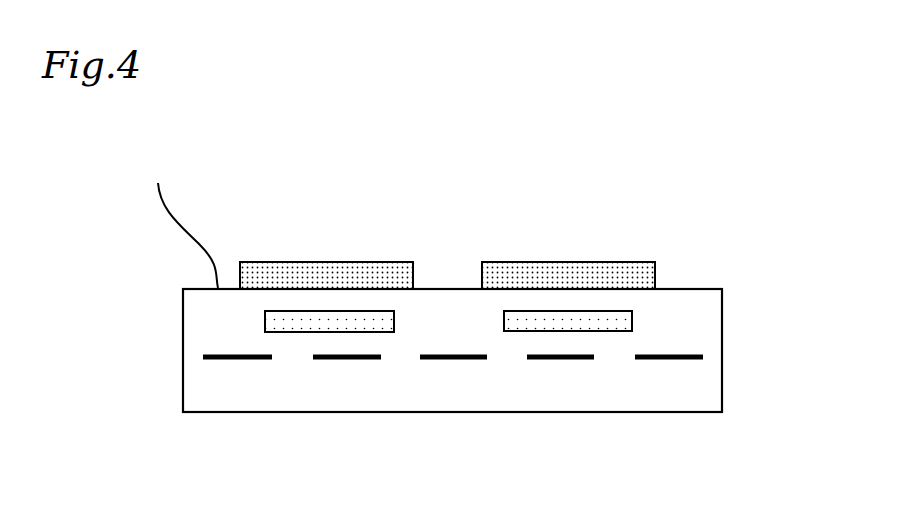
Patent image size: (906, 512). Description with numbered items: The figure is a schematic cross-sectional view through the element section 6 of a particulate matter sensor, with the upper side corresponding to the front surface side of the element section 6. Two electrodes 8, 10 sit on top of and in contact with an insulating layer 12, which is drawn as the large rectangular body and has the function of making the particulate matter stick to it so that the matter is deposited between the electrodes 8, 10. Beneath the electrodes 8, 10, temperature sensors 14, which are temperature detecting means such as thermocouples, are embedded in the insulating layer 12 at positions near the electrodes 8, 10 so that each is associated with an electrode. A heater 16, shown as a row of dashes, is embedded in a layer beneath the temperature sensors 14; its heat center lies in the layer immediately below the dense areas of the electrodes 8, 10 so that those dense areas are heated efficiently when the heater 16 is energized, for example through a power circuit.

The element section 6 is at (179, 220).
The electrode 8 is at (347, 262).
The electrode 10 is at (534, 262).
The insulating layer 12 is at (712, 306).
The temperature sensor 14 is at (518, 321).
The heater 16 is at (557, 358).